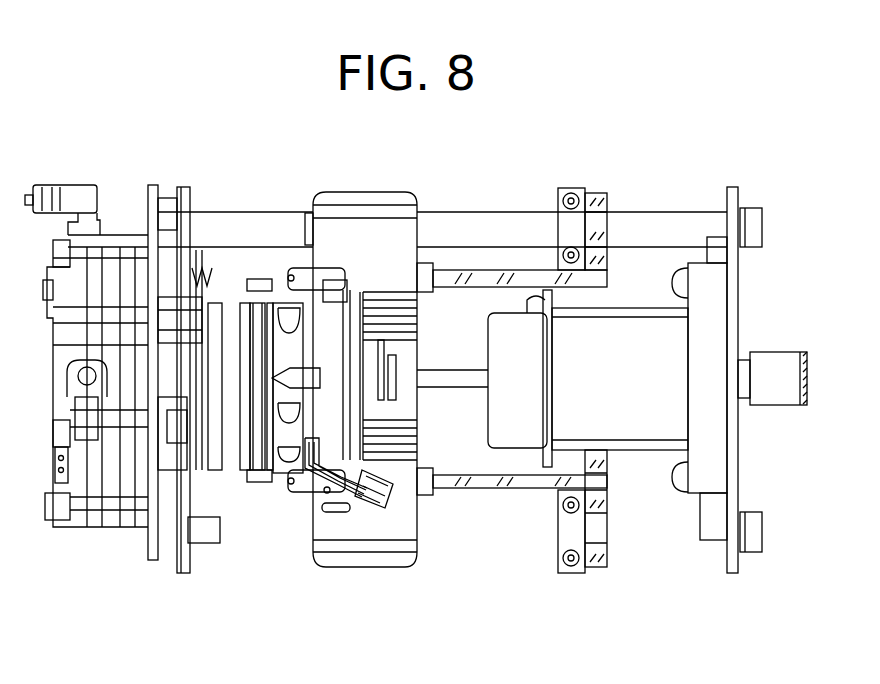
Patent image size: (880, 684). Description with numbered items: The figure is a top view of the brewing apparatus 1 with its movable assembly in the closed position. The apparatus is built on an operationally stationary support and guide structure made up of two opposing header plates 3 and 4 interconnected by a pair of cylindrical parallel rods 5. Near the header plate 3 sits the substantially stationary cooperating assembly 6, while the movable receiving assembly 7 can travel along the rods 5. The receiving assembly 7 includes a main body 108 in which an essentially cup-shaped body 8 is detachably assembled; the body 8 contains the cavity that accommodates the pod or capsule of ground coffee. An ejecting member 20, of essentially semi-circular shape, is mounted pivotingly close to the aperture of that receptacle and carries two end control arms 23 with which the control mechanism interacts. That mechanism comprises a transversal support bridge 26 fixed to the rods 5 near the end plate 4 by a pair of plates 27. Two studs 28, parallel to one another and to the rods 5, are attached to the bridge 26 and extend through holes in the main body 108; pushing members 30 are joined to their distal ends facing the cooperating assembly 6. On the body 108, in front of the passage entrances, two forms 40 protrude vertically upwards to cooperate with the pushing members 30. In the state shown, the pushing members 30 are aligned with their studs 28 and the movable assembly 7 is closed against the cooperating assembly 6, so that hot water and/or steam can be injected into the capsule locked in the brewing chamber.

The brewing apparatus 1 is at (585, 163).
The header plate 3 is at (182, 188).
The header plate 4 is at (736, 262).
The rods 5 is at (219, 210).
The cooperating assembly 6 is at (222, 244).
The movable receiving assembly 7 is at (348, 192).
The cup-shaped body 8 is at (272, 316).
The ejecting member 20 is at (246, 398).
The end control arms 23 is at (254, 278).
The transversal support bridge 26 is at (616, 520).
The plates 27 is at (566, 226).
The studs 28 is at (474, 288).
The pushing members 30 is at (436, 268).
The forms 40 is at (294, 276).
The main body 108 is at (387, 518).